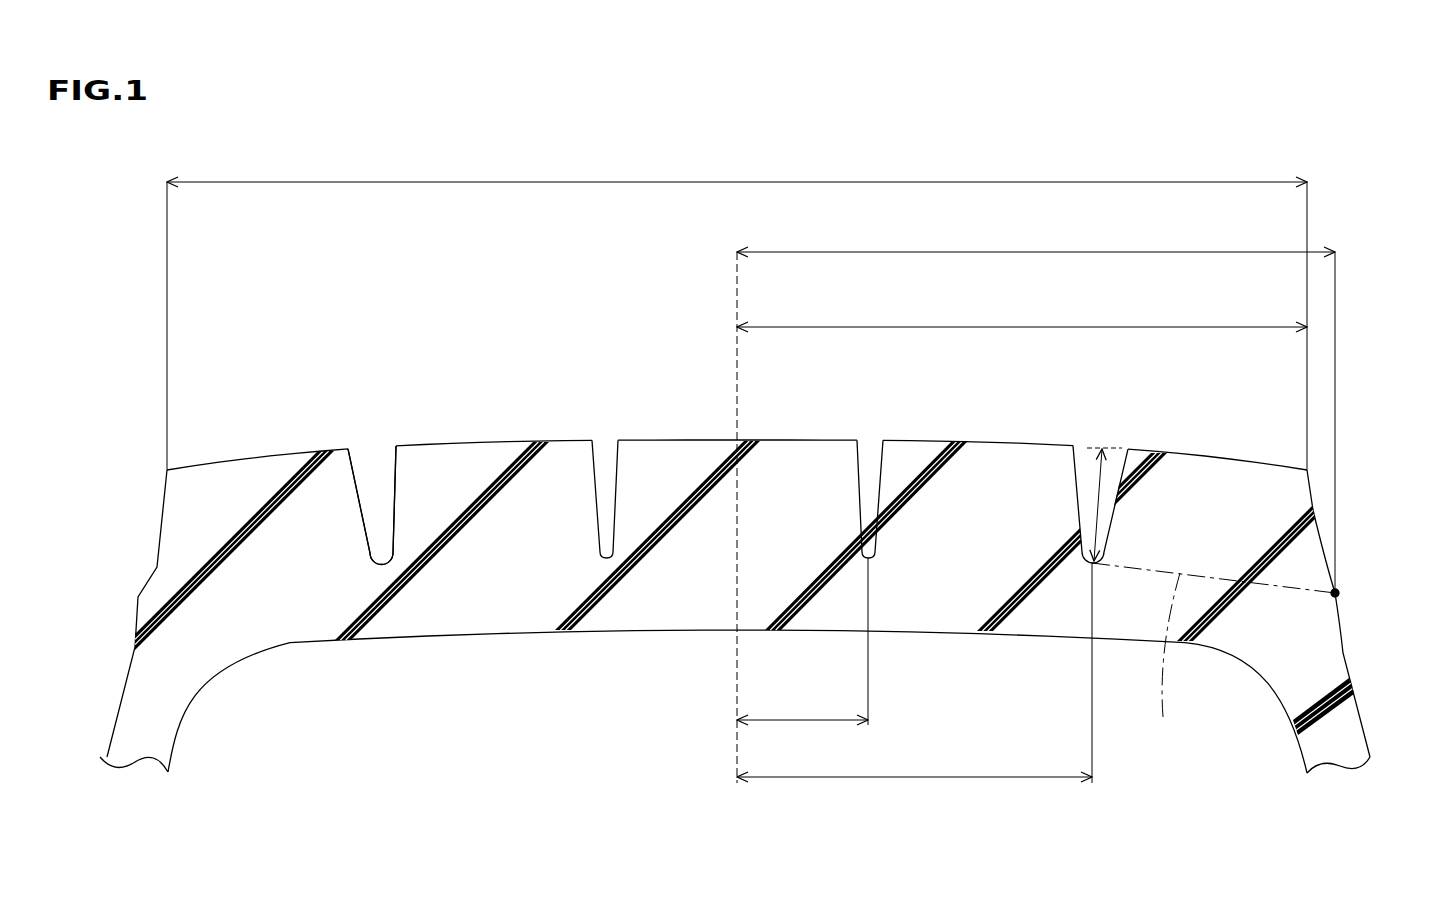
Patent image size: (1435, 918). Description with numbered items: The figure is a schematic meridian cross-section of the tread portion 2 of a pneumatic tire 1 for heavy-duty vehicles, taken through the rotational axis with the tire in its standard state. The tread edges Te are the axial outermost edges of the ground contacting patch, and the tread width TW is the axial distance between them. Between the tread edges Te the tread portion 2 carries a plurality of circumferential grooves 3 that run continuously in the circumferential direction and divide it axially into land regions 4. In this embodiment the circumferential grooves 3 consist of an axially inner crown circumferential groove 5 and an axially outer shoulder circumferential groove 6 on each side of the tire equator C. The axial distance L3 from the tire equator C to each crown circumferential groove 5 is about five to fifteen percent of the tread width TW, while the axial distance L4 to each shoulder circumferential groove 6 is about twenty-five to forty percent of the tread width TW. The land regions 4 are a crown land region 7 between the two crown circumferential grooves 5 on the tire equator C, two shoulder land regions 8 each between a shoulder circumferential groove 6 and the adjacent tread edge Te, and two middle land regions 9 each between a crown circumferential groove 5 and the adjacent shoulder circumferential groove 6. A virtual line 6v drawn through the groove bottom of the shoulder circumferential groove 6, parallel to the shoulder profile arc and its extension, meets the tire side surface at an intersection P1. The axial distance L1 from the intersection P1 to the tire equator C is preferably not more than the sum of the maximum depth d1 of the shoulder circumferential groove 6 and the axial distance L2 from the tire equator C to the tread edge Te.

The pneumatic tire 1 is at (255, 323).
The tread portion 2 is at (472, 393).
The circumferential grooves 3 is at (360, 447).
The land regions 4 is at (205, 460).
The crown circumferential groove 5 is at (605, 447).
The shoulder circumferential groove 6 is at (378, 457).
The crown land region 7 is at (663, 442).
The shoulder land region 8 is at (260, 455).
The middle land region 9 is at (513, 440).
The tire equator C is at (737, 398).
The tread edge Te is at (166, 468).
The intersection P1 is at (1340, 592).
The maximum depth of the shoulder circumferential groove d1 is at (1103, 490).
The virtual line 6v is at (1168, 662).
The tread width TW is at (737, 165).
The distance L1 is at (1036, 235).
The distance L2 is at (1022, 311).
The distance L3 is at (802, 658).
The distance L4 is at (914, 688).